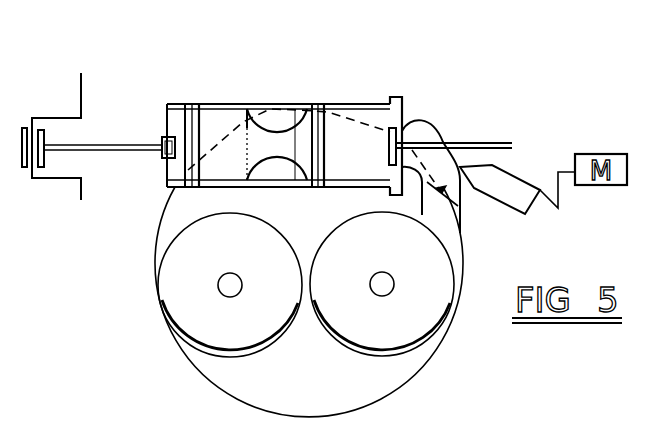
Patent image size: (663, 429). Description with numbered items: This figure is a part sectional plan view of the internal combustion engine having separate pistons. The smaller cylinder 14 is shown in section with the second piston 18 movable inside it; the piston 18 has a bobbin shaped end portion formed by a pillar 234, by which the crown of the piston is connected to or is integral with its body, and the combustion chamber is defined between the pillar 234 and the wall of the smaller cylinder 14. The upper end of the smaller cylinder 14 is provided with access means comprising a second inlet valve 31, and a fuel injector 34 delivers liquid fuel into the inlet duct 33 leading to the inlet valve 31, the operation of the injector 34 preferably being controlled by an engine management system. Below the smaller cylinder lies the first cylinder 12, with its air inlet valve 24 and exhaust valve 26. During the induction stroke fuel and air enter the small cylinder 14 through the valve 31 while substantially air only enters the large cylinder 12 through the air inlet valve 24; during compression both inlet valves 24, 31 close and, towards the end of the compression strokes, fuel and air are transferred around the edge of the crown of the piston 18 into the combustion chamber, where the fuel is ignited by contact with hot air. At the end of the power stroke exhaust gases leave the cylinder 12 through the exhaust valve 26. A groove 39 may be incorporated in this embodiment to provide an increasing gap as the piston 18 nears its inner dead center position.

The first cylinder 12 is at (246, 394).
The smaller cylinder 14 is at (375, 102).
The second piston 18 is at (221, 118).
The air inlet valve 24 is at (430, 314).
The exhaust valve 26 is at (160, 284).
The second inlet valve 31 is at (490, 142).
The inlet duct 33 is at (425, 121).
The fuel injector 34 is at (512, 205).
The groove 39 is at (518, 407).
The pillar 234 is at (273, 138).